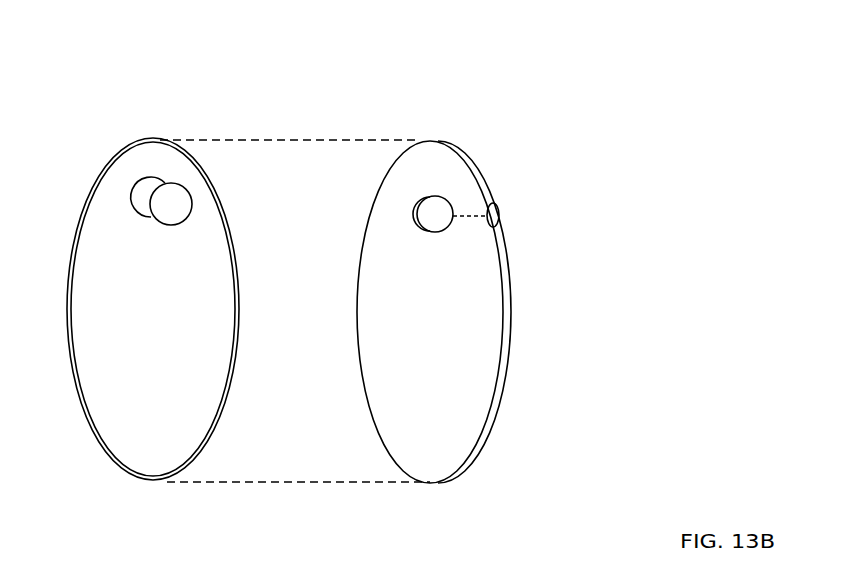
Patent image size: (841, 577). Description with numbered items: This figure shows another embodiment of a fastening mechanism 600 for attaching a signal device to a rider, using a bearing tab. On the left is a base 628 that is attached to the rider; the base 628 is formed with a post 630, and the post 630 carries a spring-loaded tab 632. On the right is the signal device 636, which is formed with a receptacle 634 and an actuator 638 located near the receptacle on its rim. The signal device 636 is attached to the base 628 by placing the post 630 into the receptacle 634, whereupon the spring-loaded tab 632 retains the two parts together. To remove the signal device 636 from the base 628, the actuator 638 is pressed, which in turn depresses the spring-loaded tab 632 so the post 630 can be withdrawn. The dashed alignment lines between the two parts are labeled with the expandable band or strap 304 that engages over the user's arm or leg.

The expandable band or strap 304 is at (295, 301).
The cartridge assembly 600 is at (512, 440).
The base 628 is at (115, 155).
The post 630 is at (177, 202).
The spring-loaded tab 632 is at (142, 200).
The receptacle 634 is at (428, 203).
The signal device 636 is at (465, 302).
The actuator 638 is at (497, 211).